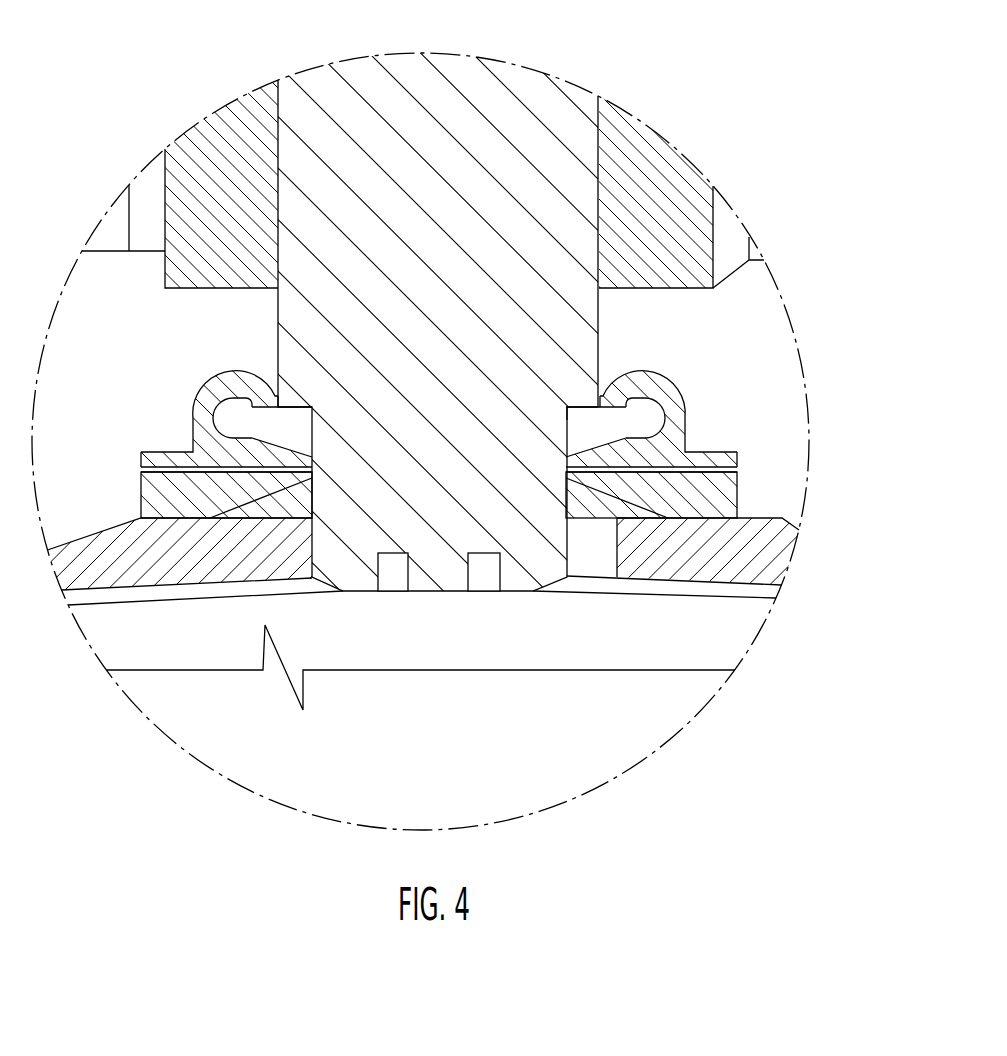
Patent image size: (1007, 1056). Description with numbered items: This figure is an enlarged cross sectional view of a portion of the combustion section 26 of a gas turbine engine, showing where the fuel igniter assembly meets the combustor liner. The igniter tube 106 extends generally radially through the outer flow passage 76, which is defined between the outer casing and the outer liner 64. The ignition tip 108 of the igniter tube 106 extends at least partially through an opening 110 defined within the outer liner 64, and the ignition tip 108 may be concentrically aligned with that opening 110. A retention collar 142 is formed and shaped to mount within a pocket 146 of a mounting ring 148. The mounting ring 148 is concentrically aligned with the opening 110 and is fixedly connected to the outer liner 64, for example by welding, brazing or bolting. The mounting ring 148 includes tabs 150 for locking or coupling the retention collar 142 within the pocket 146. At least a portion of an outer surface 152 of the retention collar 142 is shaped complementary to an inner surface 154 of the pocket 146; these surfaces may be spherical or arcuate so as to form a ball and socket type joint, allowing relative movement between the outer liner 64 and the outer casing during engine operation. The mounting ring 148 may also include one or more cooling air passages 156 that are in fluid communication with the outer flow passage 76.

The combustion section 26 is at (687, 128).
The outer liner 64 is at (768, 560).
The outer flow passage 76 is at (87, 278).
The igniter tube 106 is at (462, 72).
The ignition tip 108 is at (325, 585).
The opening 110 is at (590, 558).
The retention collar 142 is at (598, 427).
The pocket 146 is at (230, 416).
The mounting ring 148 is at (160, 490).
The tabs 150 is at (213, 380).
The outer surface 152 is at (287, 444).
The inner surface 154 is at (278, 456).
The cooling air passages 156 is at (197, 470).